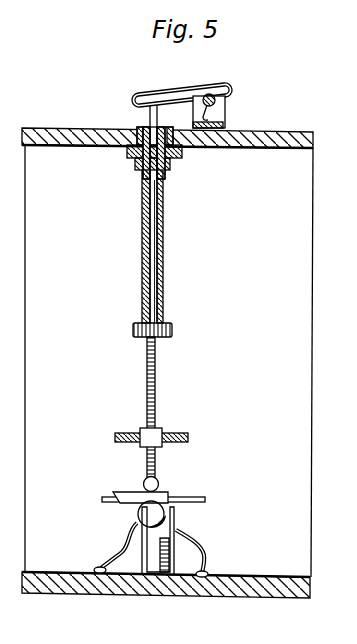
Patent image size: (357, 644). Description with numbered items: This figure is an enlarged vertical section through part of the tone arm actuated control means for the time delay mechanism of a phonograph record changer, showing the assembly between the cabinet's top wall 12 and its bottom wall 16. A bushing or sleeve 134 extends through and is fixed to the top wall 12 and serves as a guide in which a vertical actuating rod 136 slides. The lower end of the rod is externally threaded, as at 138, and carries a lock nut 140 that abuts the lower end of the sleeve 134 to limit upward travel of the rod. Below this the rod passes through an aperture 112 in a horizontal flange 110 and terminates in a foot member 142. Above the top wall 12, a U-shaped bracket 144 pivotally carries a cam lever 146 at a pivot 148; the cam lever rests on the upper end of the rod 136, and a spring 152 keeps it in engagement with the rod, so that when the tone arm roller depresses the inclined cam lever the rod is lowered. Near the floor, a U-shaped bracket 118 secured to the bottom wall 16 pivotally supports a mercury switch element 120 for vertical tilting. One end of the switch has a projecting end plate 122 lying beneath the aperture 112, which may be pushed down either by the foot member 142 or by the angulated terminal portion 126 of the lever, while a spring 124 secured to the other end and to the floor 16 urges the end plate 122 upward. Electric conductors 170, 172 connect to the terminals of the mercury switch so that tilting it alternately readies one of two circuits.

The top wall 12 is at (290, 145).
The bottom wall 16 is at (253, 585).
The horizontal flange 110 is at (178, 438).
The aperture 112 is at (145, 432).
The U-shaped bracket 118 is at (173, 548).
The mercury switch element 120 is at (150, 518).
The end plate 122 is at (131, 498).
The spring 124 is at (162, 573).
The angulated terminal portion 126 is at (198, 497).
The sleeve 134 is at (163, 213).
The actuating rod 136 is at (152, 273).
The externally threaded portion 138 is at (155, 393).
The lock nut 140 is at (172, 331).
The foot member 142 is at (158, 485).
The U-shaped bracket 144 is at (216, 123).
The cam lever 146 is at (187, 98).
The pivot 148 is at (211, 97).
The spring 152 is at (215, 112).
The electric conductor 170 is at (98, 560).
The electric conductor 172 is at (205, 560).